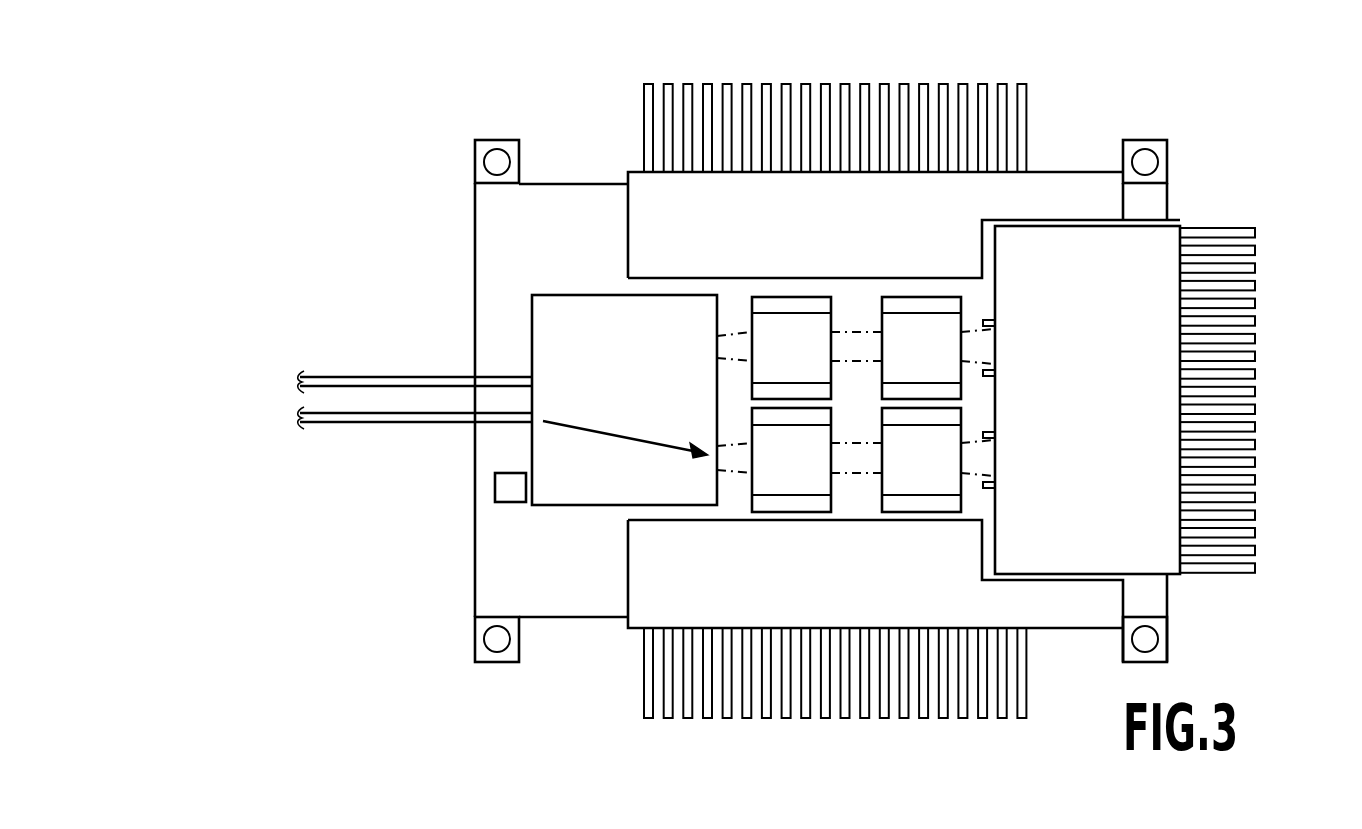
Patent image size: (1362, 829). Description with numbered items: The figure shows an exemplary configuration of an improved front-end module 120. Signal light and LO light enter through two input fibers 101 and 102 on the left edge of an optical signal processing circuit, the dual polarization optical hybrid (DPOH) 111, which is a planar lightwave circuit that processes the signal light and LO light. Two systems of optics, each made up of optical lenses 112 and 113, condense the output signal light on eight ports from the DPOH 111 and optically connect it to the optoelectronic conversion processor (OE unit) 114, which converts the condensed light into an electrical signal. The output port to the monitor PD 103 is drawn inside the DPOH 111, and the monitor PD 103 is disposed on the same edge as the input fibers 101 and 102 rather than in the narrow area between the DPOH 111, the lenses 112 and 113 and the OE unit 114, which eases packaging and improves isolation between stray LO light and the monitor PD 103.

The optical input 101 is at (356, 376).
The optical input 102 is at (352, 426).
The monitor PD 103 is at (507, 505).
The optical signal processing circuit (DPOH) 111 is at (567, 293).
The optical lens 112 is at (793, 295).
The optical lens 113 is at (923, 295).
The optoelectronic conversion processor (OE unit) 114 is at (1178, 222).
The front-end module 120 is at (1253, 102).